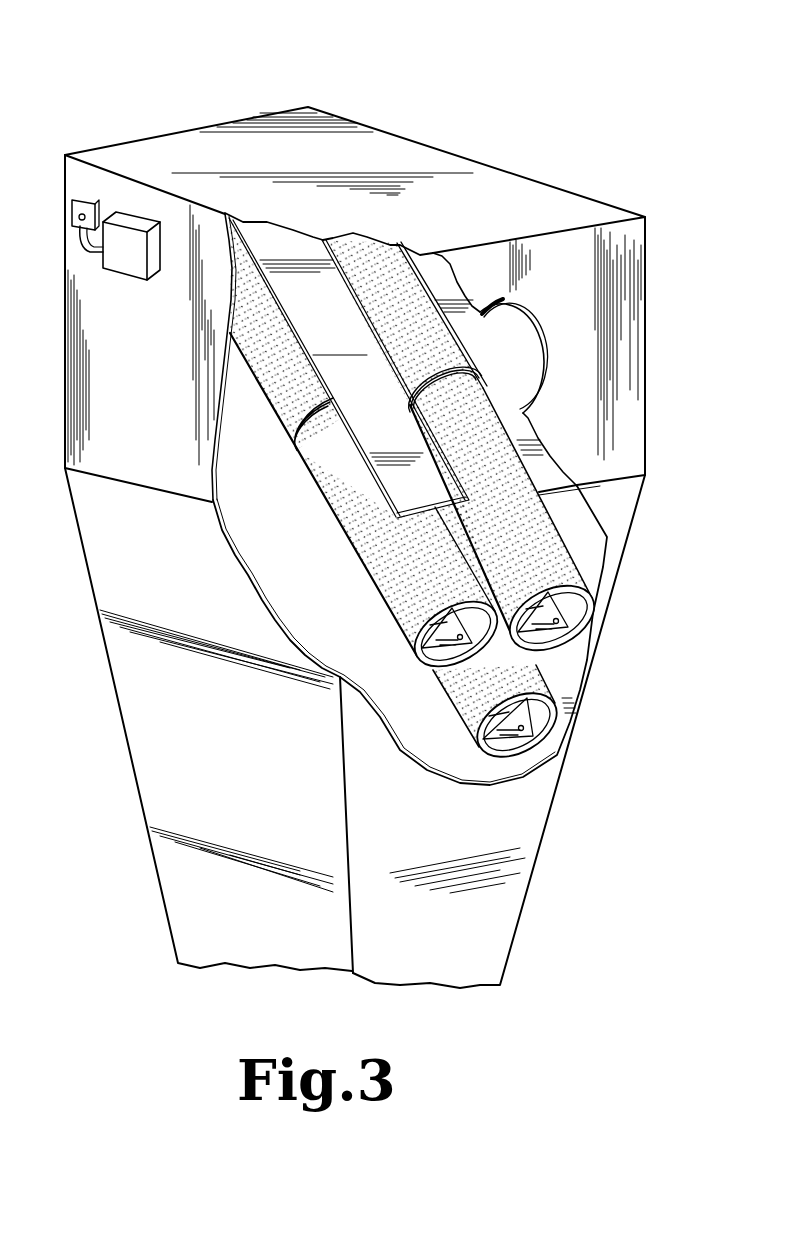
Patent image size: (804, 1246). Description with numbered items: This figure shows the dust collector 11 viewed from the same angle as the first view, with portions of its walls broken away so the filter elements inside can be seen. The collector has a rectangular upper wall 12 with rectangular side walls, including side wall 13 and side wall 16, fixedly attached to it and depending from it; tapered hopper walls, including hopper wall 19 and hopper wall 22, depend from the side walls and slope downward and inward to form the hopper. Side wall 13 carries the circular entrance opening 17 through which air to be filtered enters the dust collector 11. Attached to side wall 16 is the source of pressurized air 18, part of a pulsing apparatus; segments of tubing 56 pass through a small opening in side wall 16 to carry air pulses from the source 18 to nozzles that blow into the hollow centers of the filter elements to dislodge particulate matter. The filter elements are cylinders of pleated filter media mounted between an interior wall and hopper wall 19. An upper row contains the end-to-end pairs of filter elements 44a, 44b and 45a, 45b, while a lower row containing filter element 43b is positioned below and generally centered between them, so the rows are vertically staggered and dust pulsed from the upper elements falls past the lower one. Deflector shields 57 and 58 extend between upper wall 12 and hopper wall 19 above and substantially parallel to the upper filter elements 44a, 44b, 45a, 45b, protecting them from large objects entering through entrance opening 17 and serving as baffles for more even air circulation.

The dust collector 11 is at (388, 110).
The upper wall 12 is at (133, 150).
The side wall 13 is at (637, 250).
The side wall 16 is at (72, 340).
The entrance opening 17 is at (548, 342).
The source of pressurized air 18 is at (154, 272).
The hopper wall 19 is at (500, 946).
The hopper wall 22 is at (178, 923).
The filter element 43b is at (458, 705).
The filter element 44a is at (278, 410).
The filter element 44b is at (362, 560).
The filter element 45a is at (455, 372).
The filter element 45b is at (553, 553).
The tubing 56 is at (70, 245).
The deflector shield 57 is at (300, 247).
The deflector shield 58 is at (428, 265).